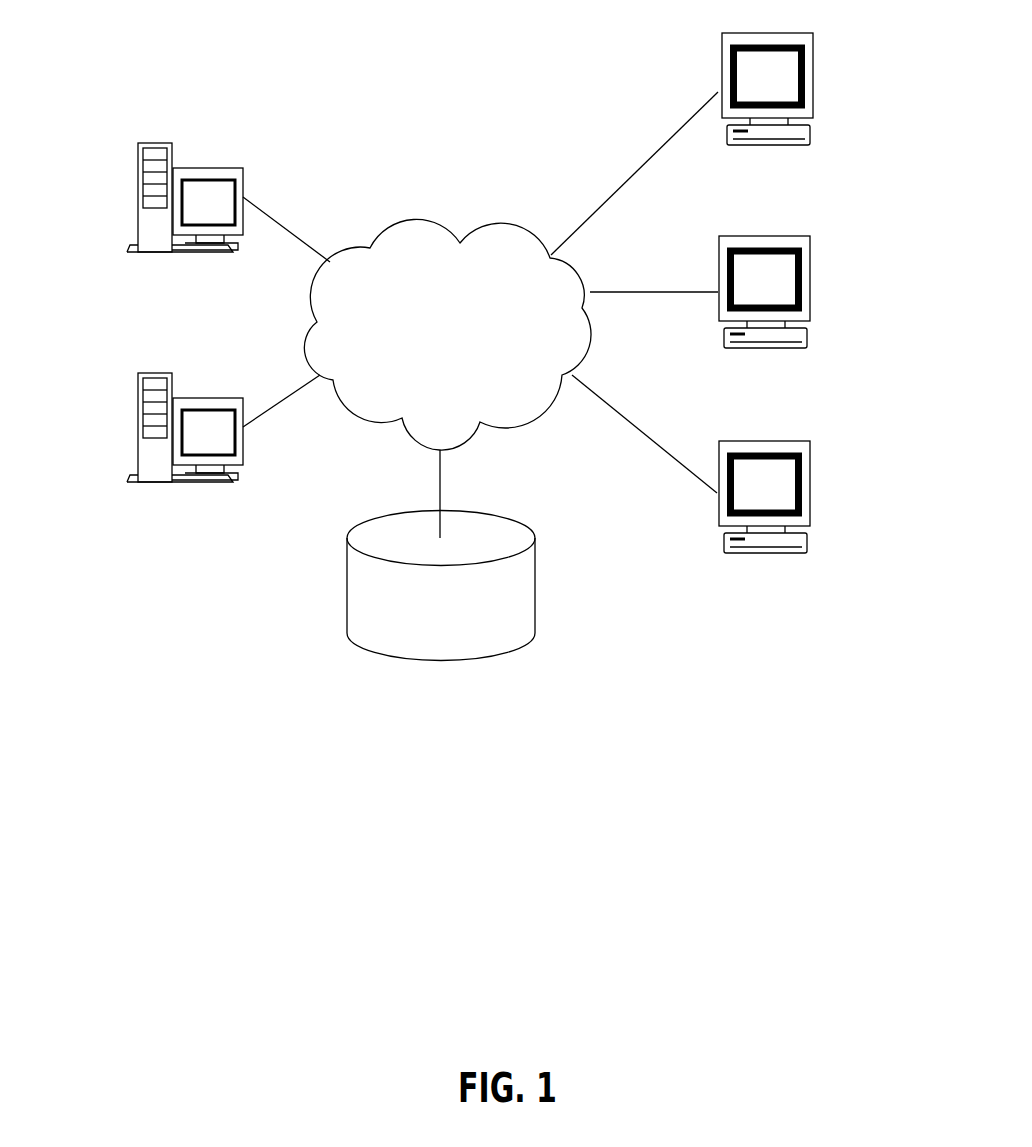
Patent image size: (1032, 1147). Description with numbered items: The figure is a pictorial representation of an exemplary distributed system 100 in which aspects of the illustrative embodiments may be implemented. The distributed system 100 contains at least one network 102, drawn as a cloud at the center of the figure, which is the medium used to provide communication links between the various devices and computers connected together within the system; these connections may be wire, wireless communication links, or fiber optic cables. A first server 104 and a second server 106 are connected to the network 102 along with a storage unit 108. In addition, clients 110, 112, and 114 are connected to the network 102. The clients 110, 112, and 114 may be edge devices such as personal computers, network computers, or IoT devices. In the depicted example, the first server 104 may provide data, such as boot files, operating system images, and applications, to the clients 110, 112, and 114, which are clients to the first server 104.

The distributed system 100 is at (547, 97).
The network 102 is at (422, 217).
The first server 104 is at (138, 198).
The second server 106 is at (138, 423).
The storage unit 108 is at (347, 583).
The client 110 is at (817, 88).
The client 112 is at (813, 292).
The client 114 is at (815, 495).